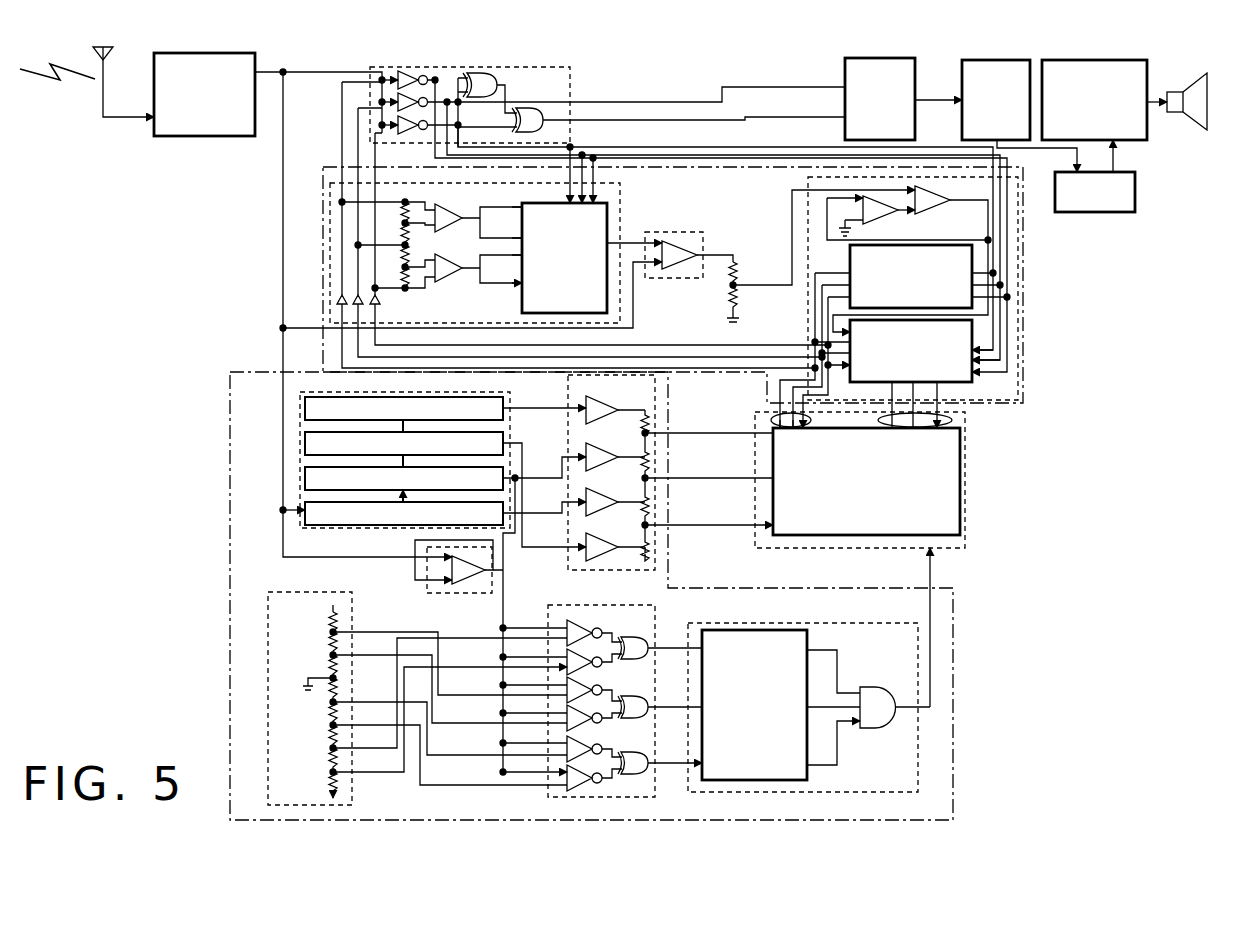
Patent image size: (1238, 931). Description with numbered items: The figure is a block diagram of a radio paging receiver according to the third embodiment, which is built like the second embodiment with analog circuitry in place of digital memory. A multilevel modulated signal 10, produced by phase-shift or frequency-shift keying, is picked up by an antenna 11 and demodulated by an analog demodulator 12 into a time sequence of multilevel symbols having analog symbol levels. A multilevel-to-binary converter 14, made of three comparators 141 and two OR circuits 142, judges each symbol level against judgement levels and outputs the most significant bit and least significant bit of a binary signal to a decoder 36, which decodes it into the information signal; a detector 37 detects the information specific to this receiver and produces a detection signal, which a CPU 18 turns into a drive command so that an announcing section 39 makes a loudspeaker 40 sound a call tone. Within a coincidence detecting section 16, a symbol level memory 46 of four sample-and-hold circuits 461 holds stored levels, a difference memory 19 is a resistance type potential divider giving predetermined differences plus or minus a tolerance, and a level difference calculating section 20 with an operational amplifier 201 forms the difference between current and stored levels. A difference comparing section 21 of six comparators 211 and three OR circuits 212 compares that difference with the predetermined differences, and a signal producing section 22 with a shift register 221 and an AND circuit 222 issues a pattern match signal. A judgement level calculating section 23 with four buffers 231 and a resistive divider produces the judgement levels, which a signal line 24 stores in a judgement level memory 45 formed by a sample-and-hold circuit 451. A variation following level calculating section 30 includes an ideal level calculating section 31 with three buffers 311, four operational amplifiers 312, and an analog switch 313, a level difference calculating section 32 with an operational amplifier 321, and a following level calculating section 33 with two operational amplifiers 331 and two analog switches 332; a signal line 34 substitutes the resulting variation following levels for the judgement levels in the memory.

The multilevel modulated signal 10 is at (48, 90).
The antenna 11 is at (105, 62).
The analog demodulator 12 is at (203, 136).
The multilevel-to-binary converter 14 is at (570, 78).
The comparator 141 is at (405, 78).
The OR circuit 142 is at (497, 77).
The coincidence detecting section 16 is at (960, 630).
The CPU 18 is at (1100, 212).
The difference memory 19 is at (346, 636).
The level difference calculating section 20 is at (495, 556).
The operational amplifier 201 is at (470, 582).
The difference comparing section 21 is at (658, 622).
The comparator 211 is at (551, 703).
The OR circuit 212 is at (636, 631).
The signal producing section 22 is at (728, 620).
The shift register 221 is at (810, 638).
The AND circuit 222 is at (873, 687).
The judgement level calculating section 23 is at (640, 568).
The buffer 231 is at (603, 404).
The signal line 24 is at (933, 572).
The variation following level calculating section 30 is at (1022, 292).
The ideal level calculating section 31 is at (616, 232).
The buffer 311 is at (355, 293).
The operational amplifier 312 is at (463, 245).
The analog switch 313 is at (518, 292).
The level difference calculating section 32 is at (697, 278).
The operational amplifier 321 is at (697, 250).
The following level calculating section 33 is at (808, 305).
The operational amplifier 331 is at (873, 220).
The analog switch 332 is at (942, 246).
The signal line 34 is at (775, 418).
The decoder 36 is at (845, 128).
The detector 37 is at (962, 118).
The announcing section 39 is at (1147, 78).
The loudspeaker 40 is at (1192, 118).
The judgement level memory 45 is at (895, 480).
The sample-and-hold circuit 451 is at (960, 502).
The symbol level memory 46 is at (300, 395).
The sample-and-hold circuit 461 is at (305, 408).